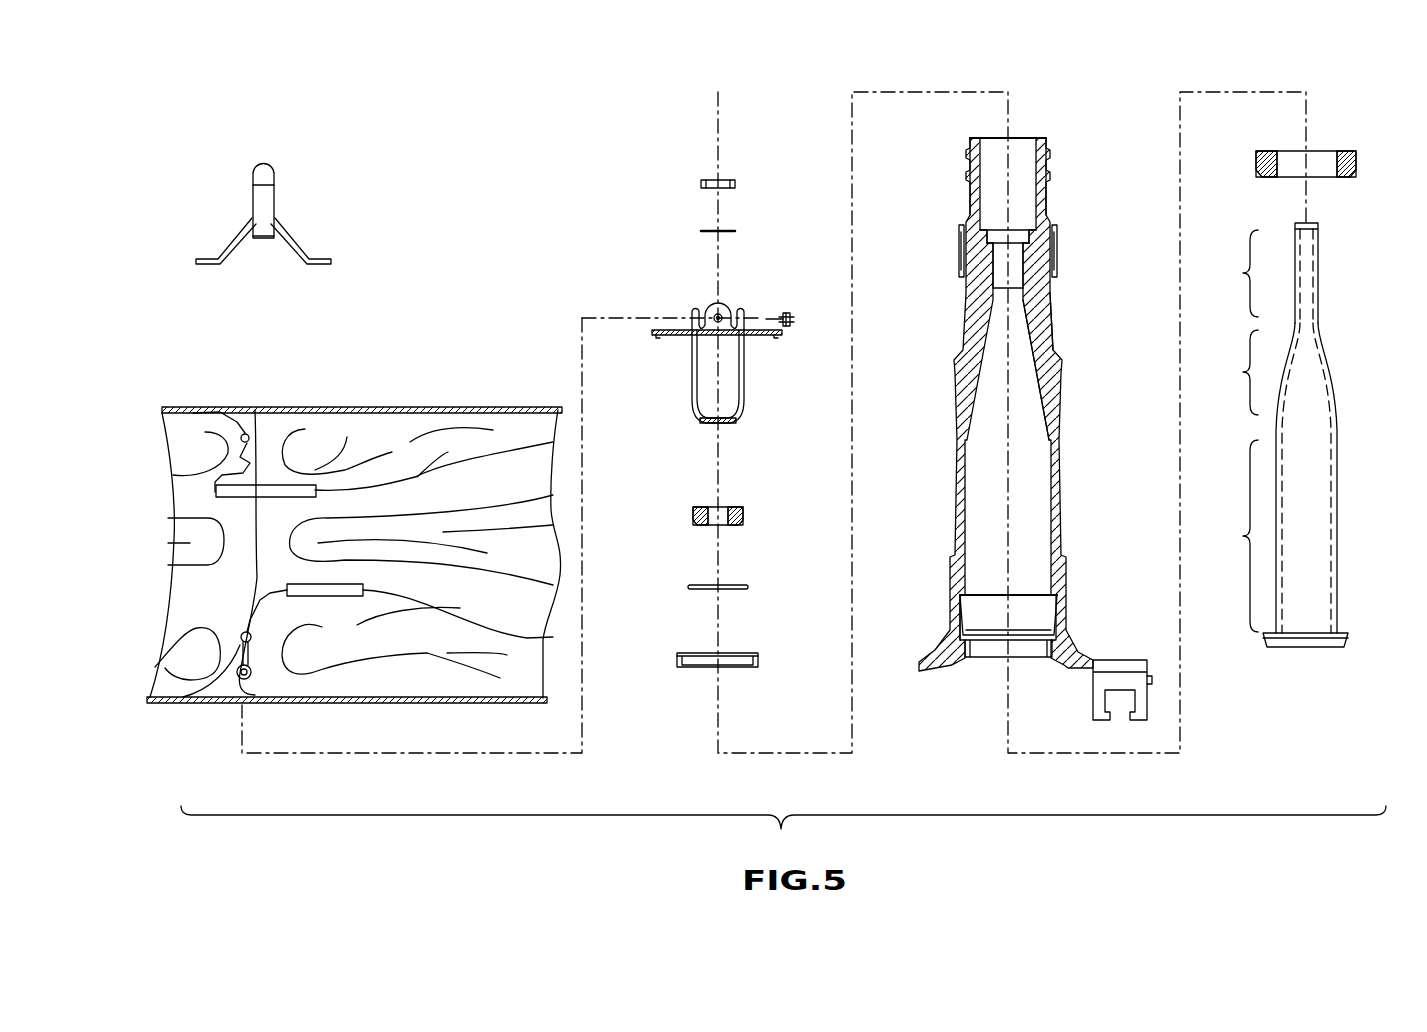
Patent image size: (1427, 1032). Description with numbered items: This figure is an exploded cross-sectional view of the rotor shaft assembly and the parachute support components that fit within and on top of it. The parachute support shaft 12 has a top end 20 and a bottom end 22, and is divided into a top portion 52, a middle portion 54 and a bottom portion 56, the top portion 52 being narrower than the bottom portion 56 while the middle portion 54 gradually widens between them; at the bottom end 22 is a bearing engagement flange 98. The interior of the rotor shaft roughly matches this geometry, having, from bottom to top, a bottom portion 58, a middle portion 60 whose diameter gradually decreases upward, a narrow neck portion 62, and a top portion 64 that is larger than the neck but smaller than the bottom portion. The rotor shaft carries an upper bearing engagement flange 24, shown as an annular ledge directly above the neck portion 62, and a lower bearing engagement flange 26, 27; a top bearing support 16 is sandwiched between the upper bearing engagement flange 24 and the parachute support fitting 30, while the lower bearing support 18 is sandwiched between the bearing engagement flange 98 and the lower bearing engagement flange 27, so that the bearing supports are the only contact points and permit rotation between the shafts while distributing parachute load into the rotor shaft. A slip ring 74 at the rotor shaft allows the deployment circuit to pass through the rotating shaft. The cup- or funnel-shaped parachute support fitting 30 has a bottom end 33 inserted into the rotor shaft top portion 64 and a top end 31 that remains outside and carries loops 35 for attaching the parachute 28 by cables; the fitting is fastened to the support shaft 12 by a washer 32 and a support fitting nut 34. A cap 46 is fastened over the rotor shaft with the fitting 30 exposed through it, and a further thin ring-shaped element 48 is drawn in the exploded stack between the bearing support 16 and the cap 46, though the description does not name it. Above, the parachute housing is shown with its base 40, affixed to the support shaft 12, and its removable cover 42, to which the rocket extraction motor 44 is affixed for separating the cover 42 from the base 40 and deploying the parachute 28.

The parachute support shaft 12 is at (1323, 512).
The top bearing support 16 is at (693, 516).
The lower bearing support 18 is at (1350, 150).
The top end 20 is at (1320, 263).
The bottom end 22 is at (1350, 636).
The upper bearing engagement flange 24 is at (1028, 240).
The lower bearing engagement flange 26 is at (1057, 598).
The lower bearing engagement flange 27 is at (958, 598).
The parachute 28 is at (287, 591).
The parachute support fitting 30 is at (692, 368).
The top end 31 is at (720, 308).
The washer 32 is at (705, 230).
The bottom end 33 is at (735, 425).
The support fitting nut 34 is at (710, 178).
The loops 35 is at (692, 312).
The base 40 is at (185, 702).
The removable cover 42 is at (175, 408).
The rocket extraction motor 44 is at (253, 200).
The cap 46 is at (677, 660).
The washer 48 is at (690, 587).
The top portion 52 is at (1230, 273).
The middle portion 54 is at (1230, 372).
The bottom portion 56 is at (1230, 536).
The bottom portion 58 is at (963, 506).
The middle portion 60 is at (1050, 342).
The narrow neck portion 62 is at (1028, 264).
The top portion 64 is at (972, 180).
The slip ring 74 is at (1057, 232).
The bearing engagement flange 98 is at (1340, 632).